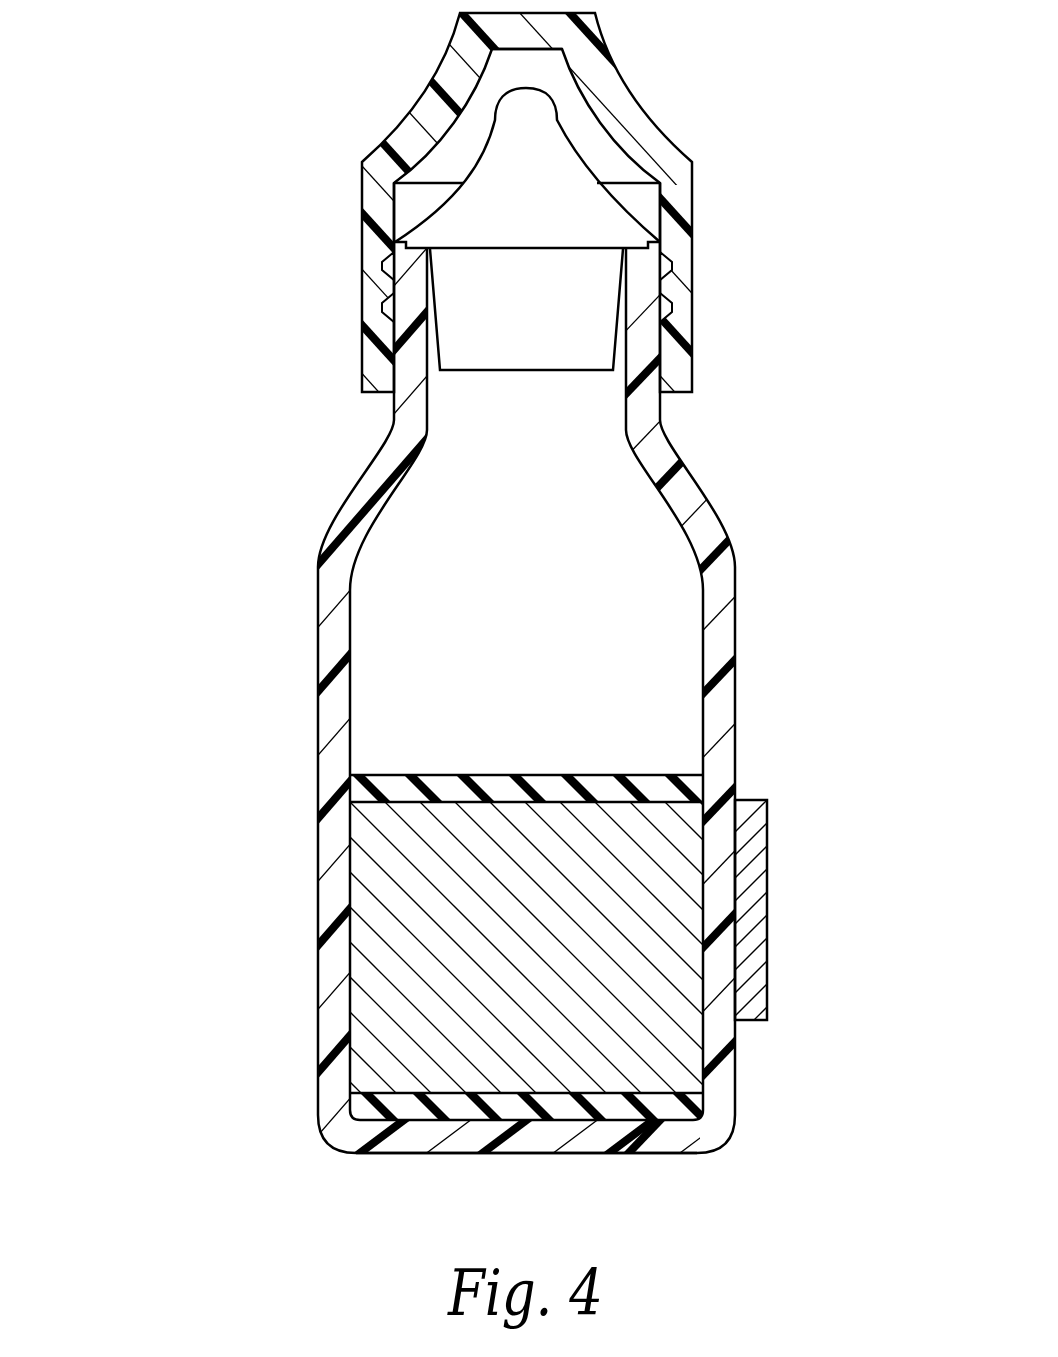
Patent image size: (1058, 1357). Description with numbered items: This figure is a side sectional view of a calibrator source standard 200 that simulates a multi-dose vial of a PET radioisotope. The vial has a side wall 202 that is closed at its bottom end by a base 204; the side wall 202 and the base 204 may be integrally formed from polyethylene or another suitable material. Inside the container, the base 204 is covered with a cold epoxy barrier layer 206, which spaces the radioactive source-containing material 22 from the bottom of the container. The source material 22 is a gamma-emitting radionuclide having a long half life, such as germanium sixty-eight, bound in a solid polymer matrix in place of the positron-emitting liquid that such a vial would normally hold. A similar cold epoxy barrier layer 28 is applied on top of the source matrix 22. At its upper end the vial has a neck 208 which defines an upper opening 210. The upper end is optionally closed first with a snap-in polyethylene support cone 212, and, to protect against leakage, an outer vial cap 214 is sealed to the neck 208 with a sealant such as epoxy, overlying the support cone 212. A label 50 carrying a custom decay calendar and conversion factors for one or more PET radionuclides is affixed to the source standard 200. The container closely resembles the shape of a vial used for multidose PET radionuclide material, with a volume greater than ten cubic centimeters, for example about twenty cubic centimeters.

The calibrator source standard 200 is at (208, 550).
The side wall 202 is at (317, 725).
The base 204 is at (648, 1153).
The cold epoxy barrier layer 206 is at (465, 1110).
The neck 208 is at (352, 288).
The upper opening 210 is at (533, 312).
The support cone 212 is at (603, 213).
The outer vial cap 214 is at (360, 188).
The radioactive source-containing material 22 is at (373, 892).
The cold epoxy barrier layer 28 is at (552, 775).
The label 50 is at (768, 896).